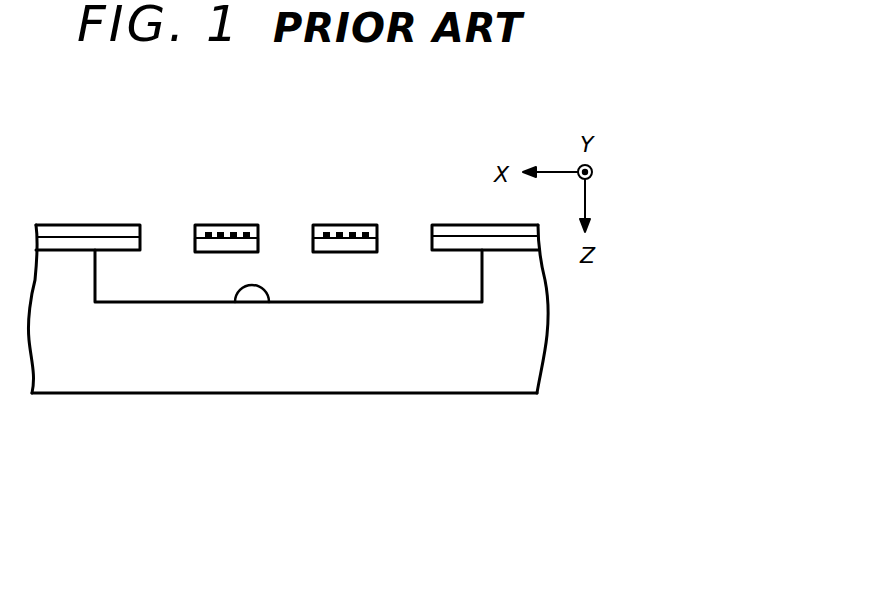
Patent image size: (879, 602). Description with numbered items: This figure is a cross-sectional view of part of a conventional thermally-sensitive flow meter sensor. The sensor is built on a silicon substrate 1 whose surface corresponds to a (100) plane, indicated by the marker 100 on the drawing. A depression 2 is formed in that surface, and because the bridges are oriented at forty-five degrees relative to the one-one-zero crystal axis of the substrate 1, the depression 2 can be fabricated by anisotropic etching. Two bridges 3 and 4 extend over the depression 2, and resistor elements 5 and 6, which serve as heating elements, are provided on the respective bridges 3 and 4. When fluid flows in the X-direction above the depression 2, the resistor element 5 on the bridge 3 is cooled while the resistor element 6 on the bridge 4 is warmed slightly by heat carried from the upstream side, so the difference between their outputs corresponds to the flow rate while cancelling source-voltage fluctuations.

The substrate 1 is at (513, 369).
The depression 2 is at (450, 302).
The bridge 3 is at (353, 225).
The bridge 4 is at (232, 225).
The resistor element 5 is at (350, 240).
The resistor element 6 is at (222, 240).
The (100) plane 100 is at (269, 302).